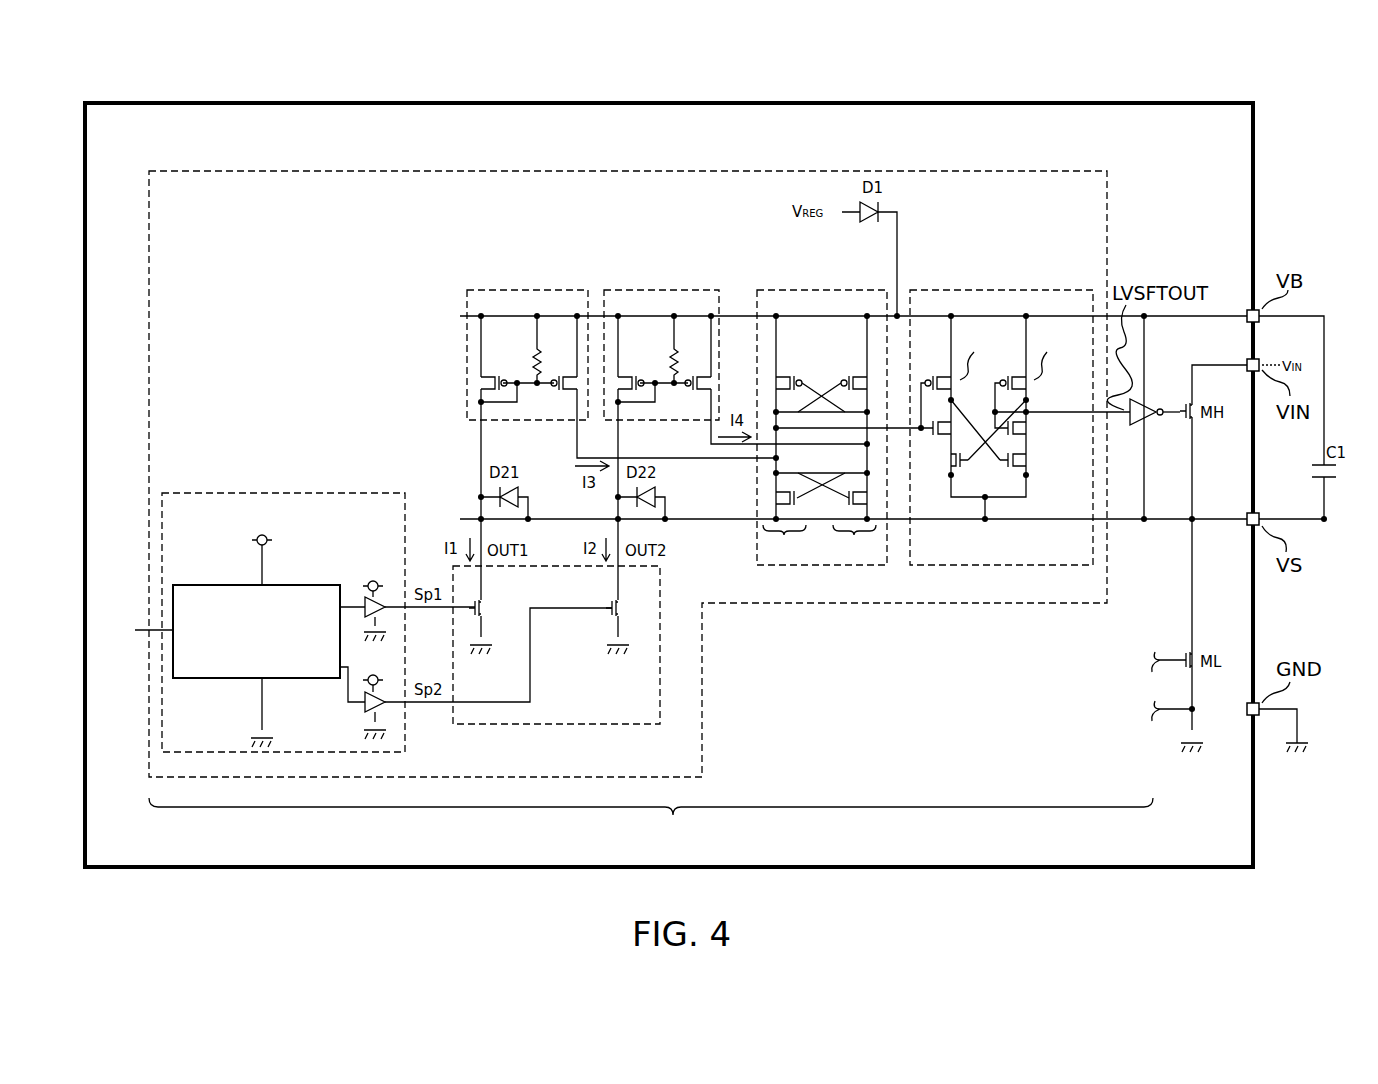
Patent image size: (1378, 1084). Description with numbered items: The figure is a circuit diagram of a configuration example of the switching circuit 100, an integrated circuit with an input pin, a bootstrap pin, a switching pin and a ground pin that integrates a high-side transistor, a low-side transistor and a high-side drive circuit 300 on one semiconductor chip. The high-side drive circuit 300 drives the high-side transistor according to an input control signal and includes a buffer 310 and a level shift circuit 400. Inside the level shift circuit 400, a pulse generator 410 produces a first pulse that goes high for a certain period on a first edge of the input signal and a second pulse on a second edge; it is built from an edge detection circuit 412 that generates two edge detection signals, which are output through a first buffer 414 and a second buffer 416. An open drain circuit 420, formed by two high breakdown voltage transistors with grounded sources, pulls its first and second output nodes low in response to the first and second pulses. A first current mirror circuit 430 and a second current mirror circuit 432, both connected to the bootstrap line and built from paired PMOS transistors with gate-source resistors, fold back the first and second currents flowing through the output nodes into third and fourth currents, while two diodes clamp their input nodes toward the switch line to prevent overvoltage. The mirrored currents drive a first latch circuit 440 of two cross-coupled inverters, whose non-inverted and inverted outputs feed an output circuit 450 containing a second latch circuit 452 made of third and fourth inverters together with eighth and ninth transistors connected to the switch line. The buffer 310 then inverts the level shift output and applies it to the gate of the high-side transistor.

The switching circuit 100 is at (1018, 103).
The high-side drive circuit 300 is at (651, 822).
The level shift circuit 400 is at (996, 171).
The pulse generator 410 is at (250, 602).
The edge detection circuit 412 is at (218, 585).
The buffer 414 is at (364, 600).
The buffer 416 is at (365, 710).
The open drain circuit 420 is at (662, 602).
The first current mirror circuit 430 is at (520, 290).
The second current mirror circuit 432 is at (636, 290).
The first latch circuit 440 is at (762, 290).
The output circuit 450 is at (1001, 403).
The second latch circuit 452 is at (995, 417).
The buffer 310 is at (1150, 398).